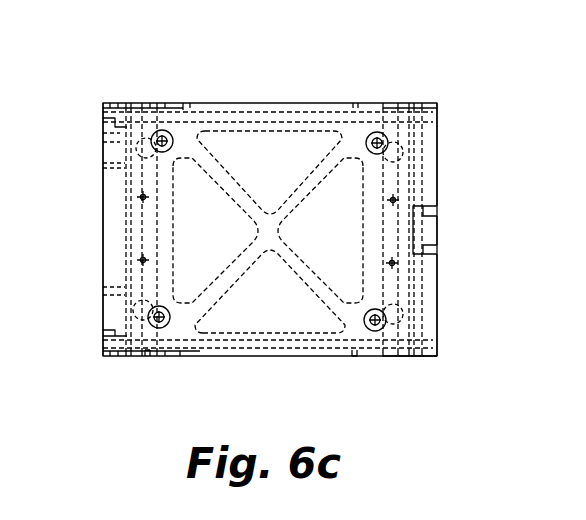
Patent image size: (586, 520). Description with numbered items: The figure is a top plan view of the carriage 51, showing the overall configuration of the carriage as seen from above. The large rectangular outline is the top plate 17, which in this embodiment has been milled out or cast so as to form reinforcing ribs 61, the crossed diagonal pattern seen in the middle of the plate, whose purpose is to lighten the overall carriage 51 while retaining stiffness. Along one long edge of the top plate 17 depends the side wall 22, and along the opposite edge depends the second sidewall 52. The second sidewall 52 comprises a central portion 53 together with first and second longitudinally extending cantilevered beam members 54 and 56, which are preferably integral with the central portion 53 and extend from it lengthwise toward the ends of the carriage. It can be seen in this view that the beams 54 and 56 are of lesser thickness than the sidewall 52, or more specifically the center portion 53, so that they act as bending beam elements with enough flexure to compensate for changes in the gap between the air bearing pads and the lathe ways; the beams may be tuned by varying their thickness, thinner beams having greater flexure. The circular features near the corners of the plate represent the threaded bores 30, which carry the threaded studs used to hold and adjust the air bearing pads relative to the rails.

The carriage 51 is at (235, 82).
The threaded bore 30 is at (158, 131).
The reinforcing rib 61 is at (242, 199).
The top plate 17 is at (248, 323).
The side wall 22 is at (103, 236).
The first cantilevered beam member 54 is at (433, 165).
The central portion 53 is at (433, 232).
The second sidewall 52 is at (437, 243).
The second cantilevered beam member 56 is at (433, 303).